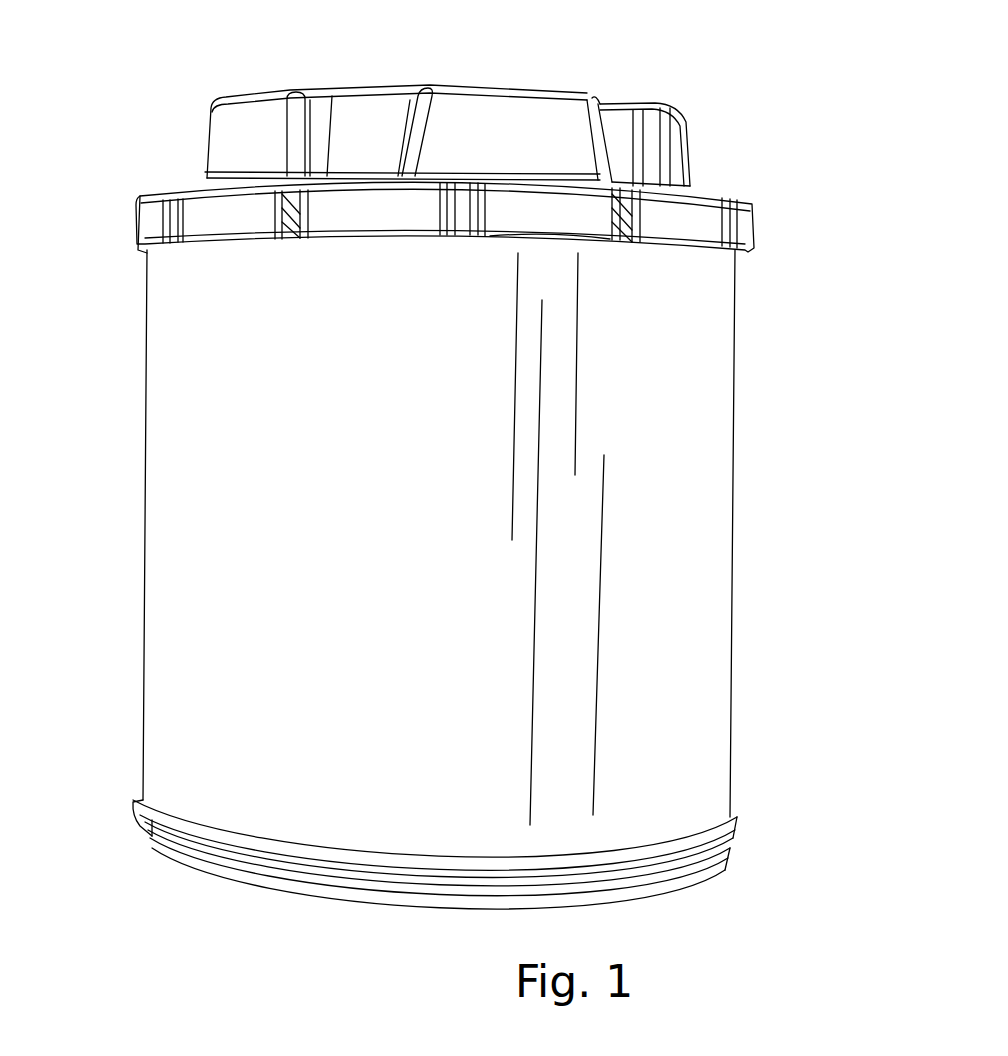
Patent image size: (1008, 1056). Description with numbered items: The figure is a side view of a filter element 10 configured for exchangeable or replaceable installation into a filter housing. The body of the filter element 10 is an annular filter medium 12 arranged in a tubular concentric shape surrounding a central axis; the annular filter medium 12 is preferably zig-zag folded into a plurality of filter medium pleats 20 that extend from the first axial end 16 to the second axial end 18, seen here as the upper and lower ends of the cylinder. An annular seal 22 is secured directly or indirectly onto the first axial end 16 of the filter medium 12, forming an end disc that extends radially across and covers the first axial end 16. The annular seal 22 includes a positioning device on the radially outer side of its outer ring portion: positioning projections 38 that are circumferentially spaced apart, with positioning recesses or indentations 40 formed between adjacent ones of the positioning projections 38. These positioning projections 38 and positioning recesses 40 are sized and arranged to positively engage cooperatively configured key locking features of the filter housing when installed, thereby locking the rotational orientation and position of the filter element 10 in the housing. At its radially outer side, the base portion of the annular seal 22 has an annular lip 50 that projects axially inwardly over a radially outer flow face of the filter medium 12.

The filter element 10 is at (822, 92).
The annular filter medium 12 is at (360, 698).
The first axial end 16 is at (653, 252).
The second axial end 18 is at (673, 818).
The filter medium pleats 20 is at (594, 710).
The annular seal 22 is at (132, 153).
The positioning projections 38 is at (512, 162).
The positioning recesses 40 is at (387, 155).
The annular lip 50 is at (570, 235).